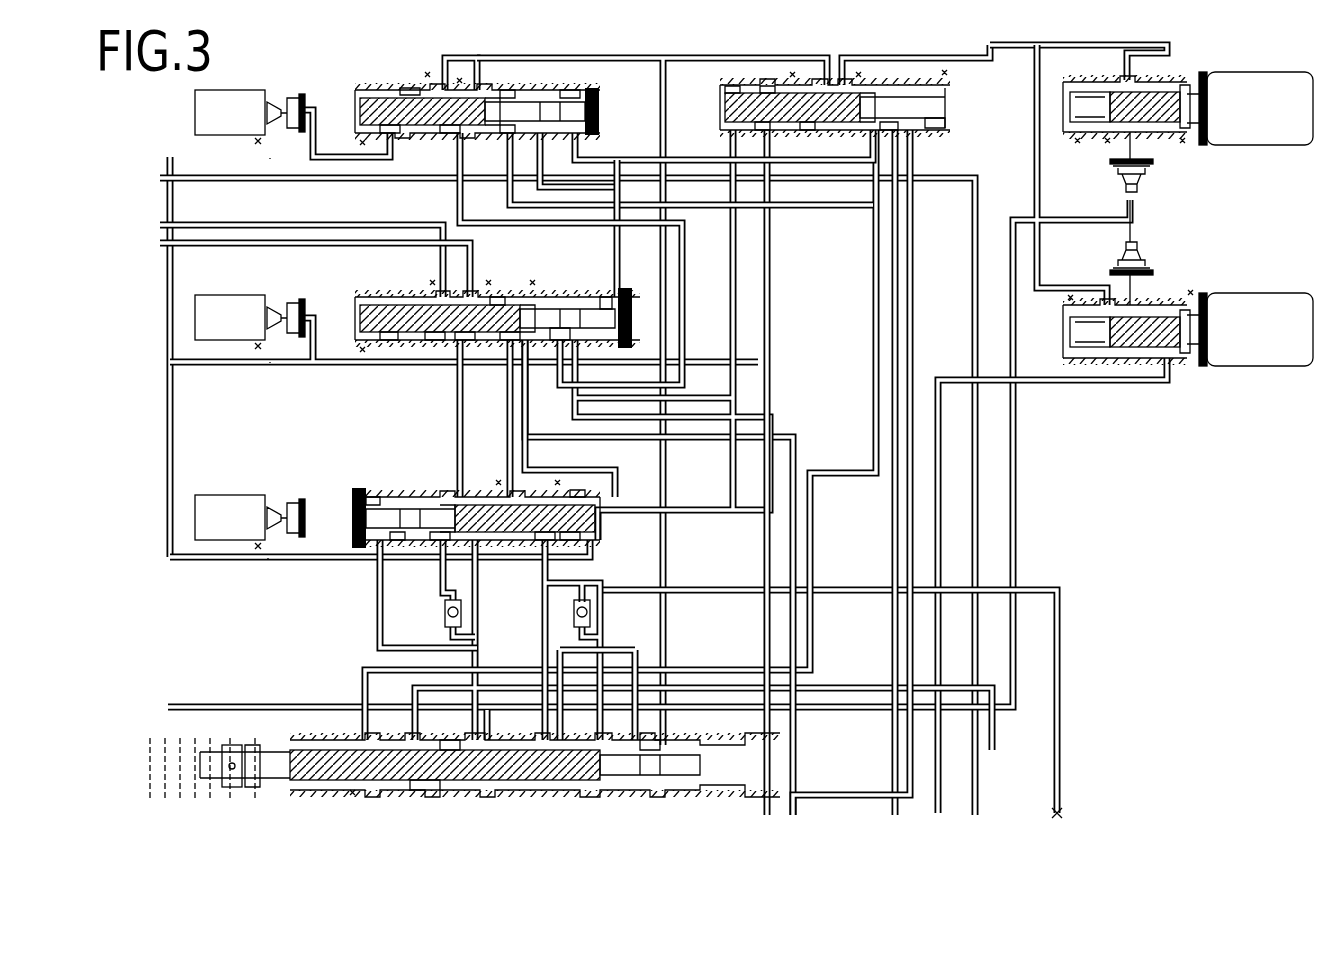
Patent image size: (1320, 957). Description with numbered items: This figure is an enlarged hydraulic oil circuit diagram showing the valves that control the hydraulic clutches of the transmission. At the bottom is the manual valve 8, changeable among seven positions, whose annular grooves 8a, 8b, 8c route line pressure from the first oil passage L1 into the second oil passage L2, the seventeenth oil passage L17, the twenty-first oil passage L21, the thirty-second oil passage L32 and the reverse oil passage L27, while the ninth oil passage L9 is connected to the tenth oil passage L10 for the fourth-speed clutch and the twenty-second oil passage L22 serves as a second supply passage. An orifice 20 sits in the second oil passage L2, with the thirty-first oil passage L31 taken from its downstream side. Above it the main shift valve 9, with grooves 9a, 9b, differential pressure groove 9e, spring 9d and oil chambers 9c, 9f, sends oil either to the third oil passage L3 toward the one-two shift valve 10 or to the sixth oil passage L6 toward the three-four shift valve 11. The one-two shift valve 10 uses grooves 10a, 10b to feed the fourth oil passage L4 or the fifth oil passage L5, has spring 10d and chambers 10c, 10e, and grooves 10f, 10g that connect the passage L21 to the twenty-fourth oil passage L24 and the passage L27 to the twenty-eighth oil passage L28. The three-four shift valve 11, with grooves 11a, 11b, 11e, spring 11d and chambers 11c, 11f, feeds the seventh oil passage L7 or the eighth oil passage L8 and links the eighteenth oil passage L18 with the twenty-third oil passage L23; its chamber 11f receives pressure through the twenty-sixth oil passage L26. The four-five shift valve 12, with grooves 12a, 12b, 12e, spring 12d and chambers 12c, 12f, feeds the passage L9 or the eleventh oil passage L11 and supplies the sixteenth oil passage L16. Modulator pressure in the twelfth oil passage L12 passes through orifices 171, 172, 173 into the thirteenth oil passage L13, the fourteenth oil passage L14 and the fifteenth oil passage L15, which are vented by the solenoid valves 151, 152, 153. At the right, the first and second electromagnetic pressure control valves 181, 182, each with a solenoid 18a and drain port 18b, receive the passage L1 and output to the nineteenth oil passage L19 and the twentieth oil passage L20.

The manual valve 8 is at (333, 728).
The annular groove 8a is at (445, 740).
The annular groove 8b is at (678, 740).
The annular groove 8c is at (418, 780).
The main shift valve 9 is at (405, 488).
The annular groove 9a is at (442, 542).
The annular groove 9b is at (545, 542).
The right-side oil chamber 9c is at (590, 495).
The spring 9d is at (380, 495).
The differential pressure groove 9e is at (600, 530).
The left-end oil chamber 9f is at (400, 542).
The 1-2 shift valve 10 is at (383, 288).
The annular groove 10a is at (437, 342).
The annular groove 10b is at (465, 342).
The left-side oil chamber 10c is at (385, 342).
The spring 10d is at (610, 295).
The right-end oil chamber 10e is at (520, 297).
The annular groove 10f is at (562, 342).
The annular groove 10g is at (510, 342).
The 3-4 shift valve 11 is at (548, 80).
The annular groove 11a is at (465, 128).
The annular groove 11b is at (435, 135).
The left-side oil chamber 11c is at (393, 90).
The spring 11d is at (575, 92).
The annular groove 11e is at (520, 135).
The right-end oil chamber 11f is at (520, 92).
The 4-5 shift valve 12 is at (905, 78).
The annular groove 12a is at (805, 130).
The annular groove 12b is at (830, 130).
The left-side oil chamber 12c is at (765, 87).
The spring 12d is at (935, 128).
The annular groove 12e is at (890, 130).
The left-end oil chamber 12f is at (728, 90).
The No. 1 solenoid valve 151 is at (235, 493).
The No. 2 solenoid valve 152 is at (230, 293).
The No. 3 solenoid valve 153 is at (232, 88).
The orifice 171 is at (268, 560).
The orifice 172 is at (270, 362).
The orifice 173 is at (268, 160).
The first electromagnetic pressure control valve 181 is at (1160, 295).
The second electromagnetic pressure control valve 182 is at (1185, 75).
The solenoid 18a is at (1238, 78).
The drain port 18b is at (1100, 135).
The orifice 20 is at (465, 618).
The No. 1 oil passage L1 is at (1043, 205).
The No. 2 oil passage L2 is at (995, 752).
The No. 3 oil passage L3 is at (455, 462).
The No. 4 oil passage L4 is at (197, 225).
The No. 5 oil passage L5 is at (192, 246).
The No. 6 oil passage L6 is at (470, 223).
The No. 7 oil passage L7 is at (477, 75).
The No. 8 oil passage L8 is at (692, 58).
The No. 9 oil passage L9 is at (810, 322).
The No. 10 oil passage L10 is at (724, 140).
The No. 11 oil passage L11 is at (990, 60).
The No. 12 oil passage L12 is at (175, 397).
The No. 13 oil passage L13 is at (355, 560).
The No. 14 oil passage L14 is at (328, 350).
The No. 15 oil passage L15 is at (328, 160).
The No. 16 oil passage L16 is at (897, 352).
The No. 17 oil passage L17 is at (912, 298).
The No. 18 oil passage L18 is at (620, 248).
The No. 19 oil passage L19 is at (1108, 383).
The No. 20 oil passage L20 is at (1060, 42).
The No. 21 oil passage L21 is at (769, 295).
The No. 22 oil passage L22 is at (602, 580).
The No. 23 oil passage L23 is at (878, 252).
The No. 24 oil passage L24 is at (785, 430).
The No. 26 oil passage L26 is at (977, 568).
The No. 27 oil passage L27 is at (604, 615).
The No. 28 oil passage L28 is at (790, 643).
The No. 31 oil passage L31 is at (1060, 595).
The No. 32 oil passage L32 is at (378, 615).